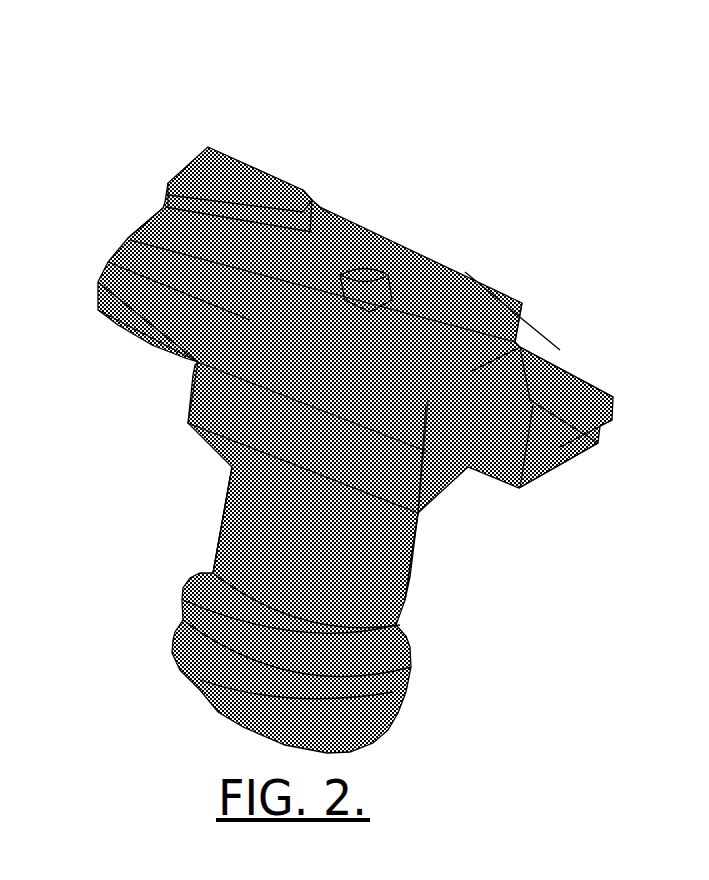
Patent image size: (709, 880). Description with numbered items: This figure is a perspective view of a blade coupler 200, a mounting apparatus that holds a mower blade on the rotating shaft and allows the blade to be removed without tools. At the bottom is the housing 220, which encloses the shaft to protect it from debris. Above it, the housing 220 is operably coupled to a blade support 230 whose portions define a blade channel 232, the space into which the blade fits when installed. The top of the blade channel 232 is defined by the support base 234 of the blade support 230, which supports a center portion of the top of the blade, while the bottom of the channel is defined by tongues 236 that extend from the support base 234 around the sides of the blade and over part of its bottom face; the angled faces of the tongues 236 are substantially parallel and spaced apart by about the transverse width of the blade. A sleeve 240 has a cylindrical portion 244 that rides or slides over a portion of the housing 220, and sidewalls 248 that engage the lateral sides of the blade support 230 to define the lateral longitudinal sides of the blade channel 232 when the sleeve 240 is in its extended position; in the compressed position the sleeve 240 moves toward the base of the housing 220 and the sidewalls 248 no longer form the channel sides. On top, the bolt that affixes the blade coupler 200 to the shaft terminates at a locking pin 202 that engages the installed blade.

The blade coupler 200 is at (160, 79).
The locking pin 202 is at (365, 276).
The housing 220 is at (383, 706).
The blade support 230 is at (607, 380).
The blade channel 232 is at (198, 251).
The support base 234 is at (470, 358).
The tongues 236 is at (236, 156).
The sleeve 240 is at (215, 466).
The cylindrical portion 244 is at (392, 570).
The sidewalls 248 is at (465, 272).